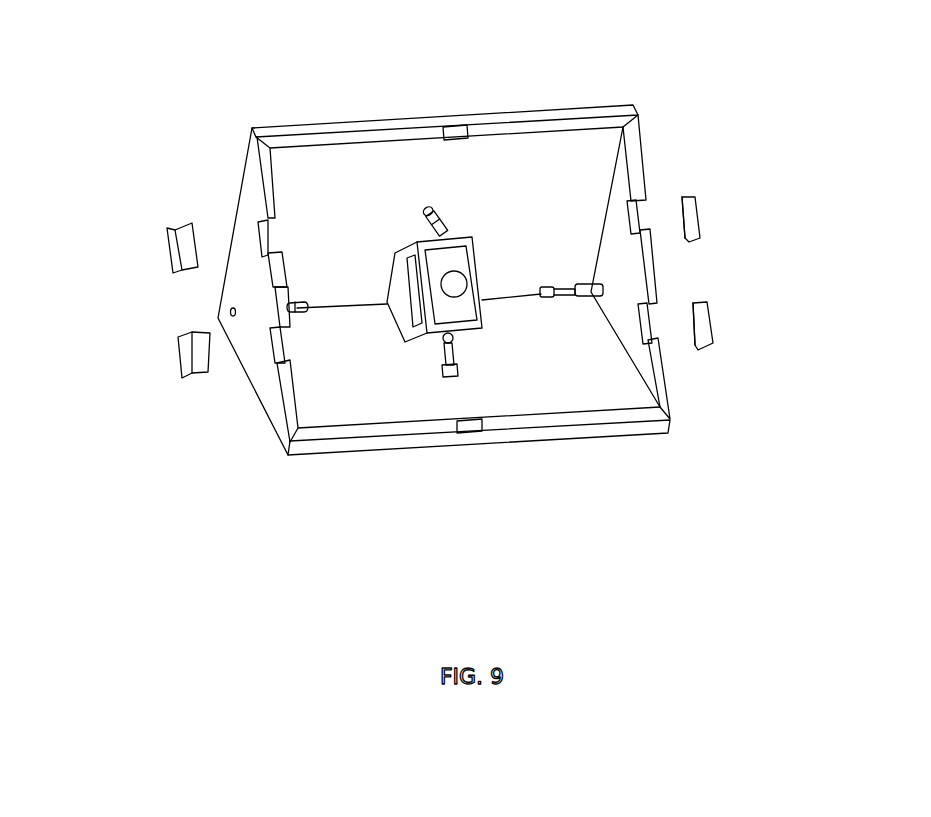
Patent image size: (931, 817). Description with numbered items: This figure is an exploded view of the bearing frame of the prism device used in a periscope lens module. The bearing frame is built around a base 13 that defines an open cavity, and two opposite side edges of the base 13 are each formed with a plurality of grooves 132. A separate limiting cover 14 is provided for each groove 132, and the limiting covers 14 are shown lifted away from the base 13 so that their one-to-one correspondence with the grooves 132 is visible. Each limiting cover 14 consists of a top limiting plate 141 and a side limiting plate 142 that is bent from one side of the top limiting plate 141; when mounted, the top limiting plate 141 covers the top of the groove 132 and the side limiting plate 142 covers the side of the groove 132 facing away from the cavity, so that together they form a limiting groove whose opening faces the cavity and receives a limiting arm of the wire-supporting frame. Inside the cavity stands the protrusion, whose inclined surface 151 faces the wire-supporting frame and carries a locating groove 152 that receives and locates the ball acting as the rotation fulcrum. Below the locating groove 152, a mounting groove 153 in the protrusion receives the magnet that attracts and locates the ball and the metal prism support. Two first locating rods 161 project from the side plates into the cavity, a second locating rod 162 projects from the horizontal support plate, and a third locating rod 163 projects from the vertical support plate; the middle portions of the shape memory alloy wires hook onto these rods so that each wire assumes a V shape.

The base 13 is at (660, 372).
The groove 132 is at (272, 345).
The limiting cover 14 is at (115, 281).
The top limiting plate 141 is at (188, 240).
The side limiting plate 142 is at (177, 258).
The inclined surface 151 is at (463, 308).
The locating groove 152 is at (450, 282).
The mounting groove 153 is at (415, 303).
The first locating rod 161 is at (303, 292).
The second locating rod 162 is at (452, 377).
The third locating rod 163 is at (430, 204).